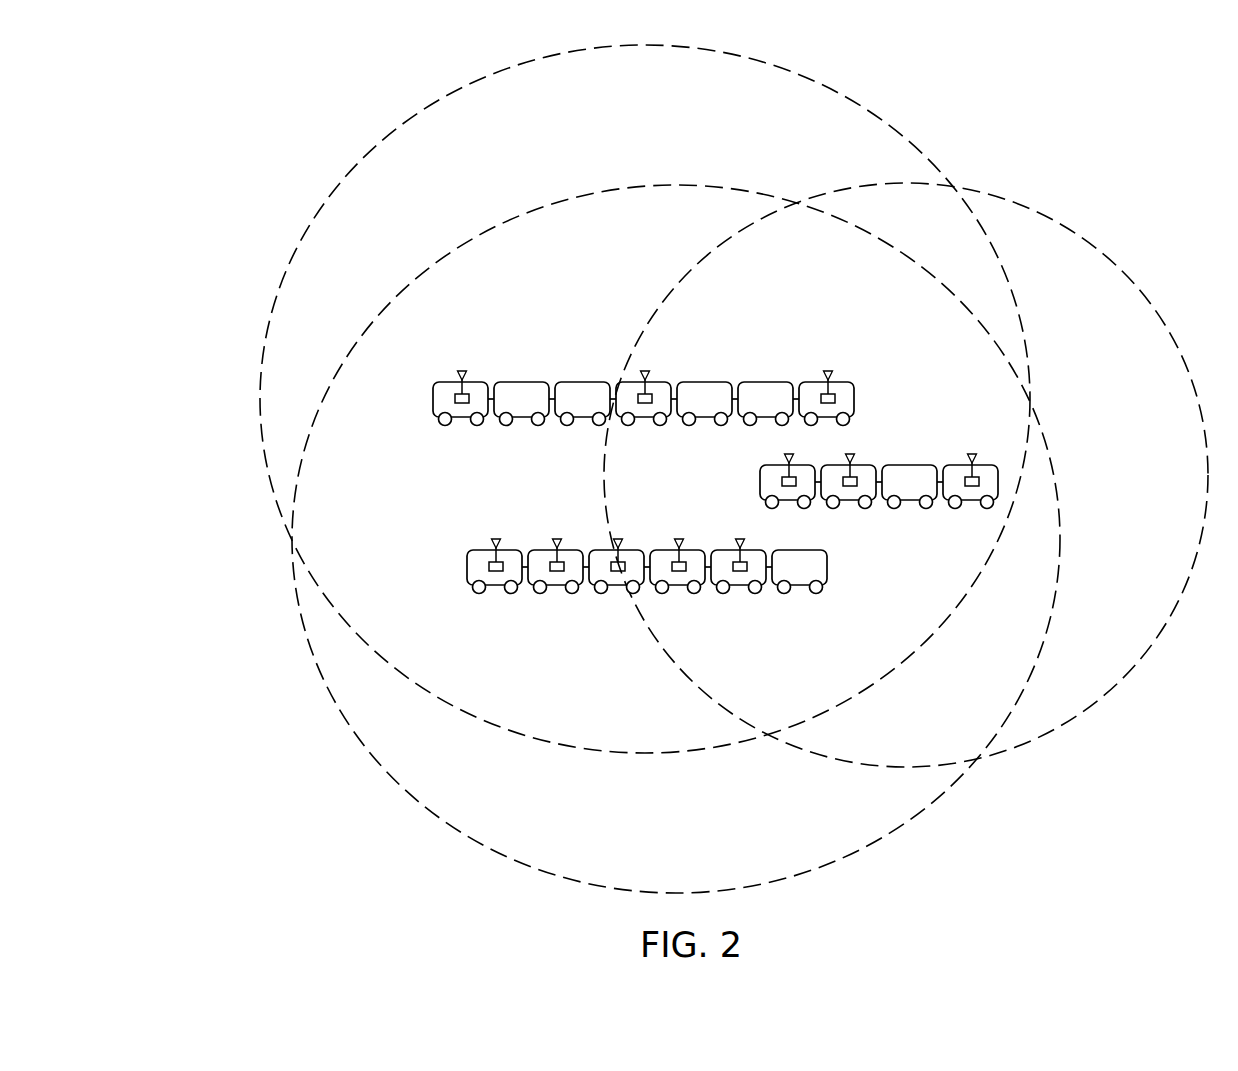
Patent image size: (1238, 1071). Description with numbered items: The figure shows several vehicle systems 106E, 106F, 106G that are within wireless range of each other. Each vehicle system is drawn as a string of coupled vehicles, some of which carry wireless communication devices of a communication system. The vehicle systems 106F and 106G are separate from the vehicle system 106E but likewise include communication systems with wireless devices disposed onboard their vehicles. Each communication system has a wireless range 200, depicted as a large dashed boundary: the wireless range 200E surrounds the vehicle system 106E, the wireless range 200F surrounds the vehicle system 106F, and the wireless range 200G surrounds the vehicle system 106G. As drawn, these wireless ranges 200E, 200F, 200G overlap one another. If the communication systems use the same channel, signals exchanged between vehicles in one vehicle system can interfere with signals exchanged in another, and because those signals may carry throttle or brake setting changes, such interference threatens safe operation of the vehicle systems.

The wireless range 200 is at (401, 101).
The wireless range 200E is at (650, 184).
The wireless range 200F is at (839, 192).
The wireless range 200G is at (261, 352).
The vehicle system 106E is at (480, 531).
The vehicle system 106F is at (933, 447).
The vehicle system 106G is at (539, 364).